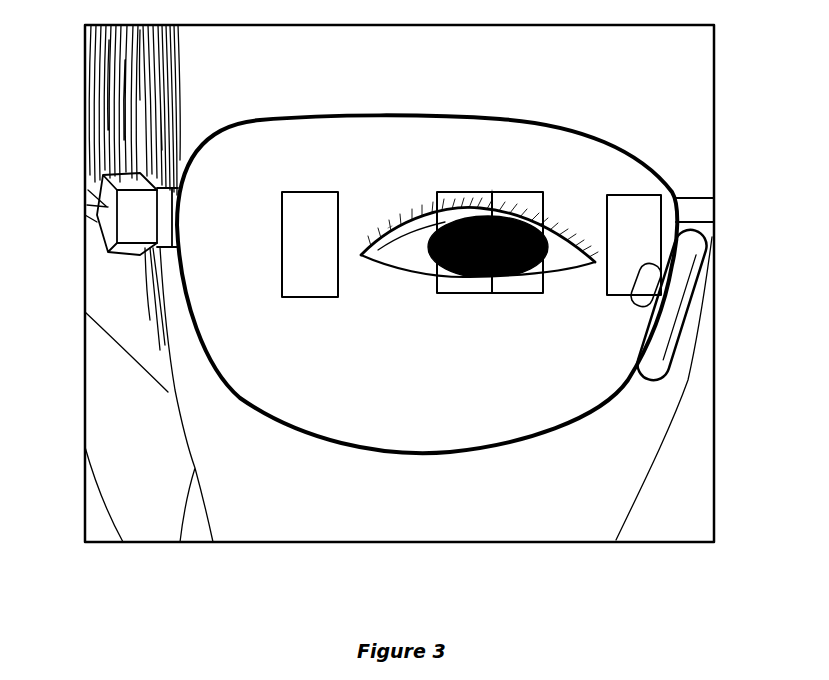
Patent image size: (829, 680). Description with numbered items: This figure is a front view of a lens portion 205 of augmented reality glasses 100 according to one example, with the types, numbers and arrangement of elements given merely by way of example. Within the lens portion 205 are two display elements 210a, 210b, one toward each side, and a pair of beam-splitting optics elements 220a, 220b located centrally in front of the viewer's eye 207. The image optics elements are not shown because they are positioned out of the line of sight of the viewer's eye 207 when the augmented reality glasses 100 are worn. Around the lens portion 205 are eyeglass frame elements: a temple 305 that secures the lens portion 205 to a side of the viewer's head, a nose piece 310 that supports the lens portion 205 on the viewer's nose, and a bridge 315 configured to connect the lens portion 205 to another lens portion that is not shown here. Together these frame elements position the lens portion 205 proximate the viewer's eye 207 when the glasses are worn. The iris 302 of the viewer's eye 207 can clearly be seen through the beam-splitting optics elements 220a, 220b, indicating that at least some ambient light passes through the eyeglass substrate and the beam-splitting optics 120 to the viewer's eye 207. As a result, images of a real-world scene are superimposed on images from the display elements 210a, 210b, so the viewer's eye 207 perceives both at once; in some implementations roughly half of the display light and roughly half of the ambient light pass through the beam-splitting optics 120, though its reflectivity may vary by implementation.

The augmented reality glasses 100 is at (305, 453).
The beam-splitting optics 120 is at (492, 182).
The lens portion 205 is at (408, 115).
The viewer's eye 207 is at (394, 218).
The display element 210a is at (316, 192).
The display element 210b is at (625, 195).
The beam-splitting optics element 220a is at (452, 283).
The beam-splitting optics element 220b is at (515, 283).
The iris 302 is at (552, 248).
The temple 305 is at (110, 202).
The nose piece 310 is at (670, 270).
The bridge 315 is at (693, 208).